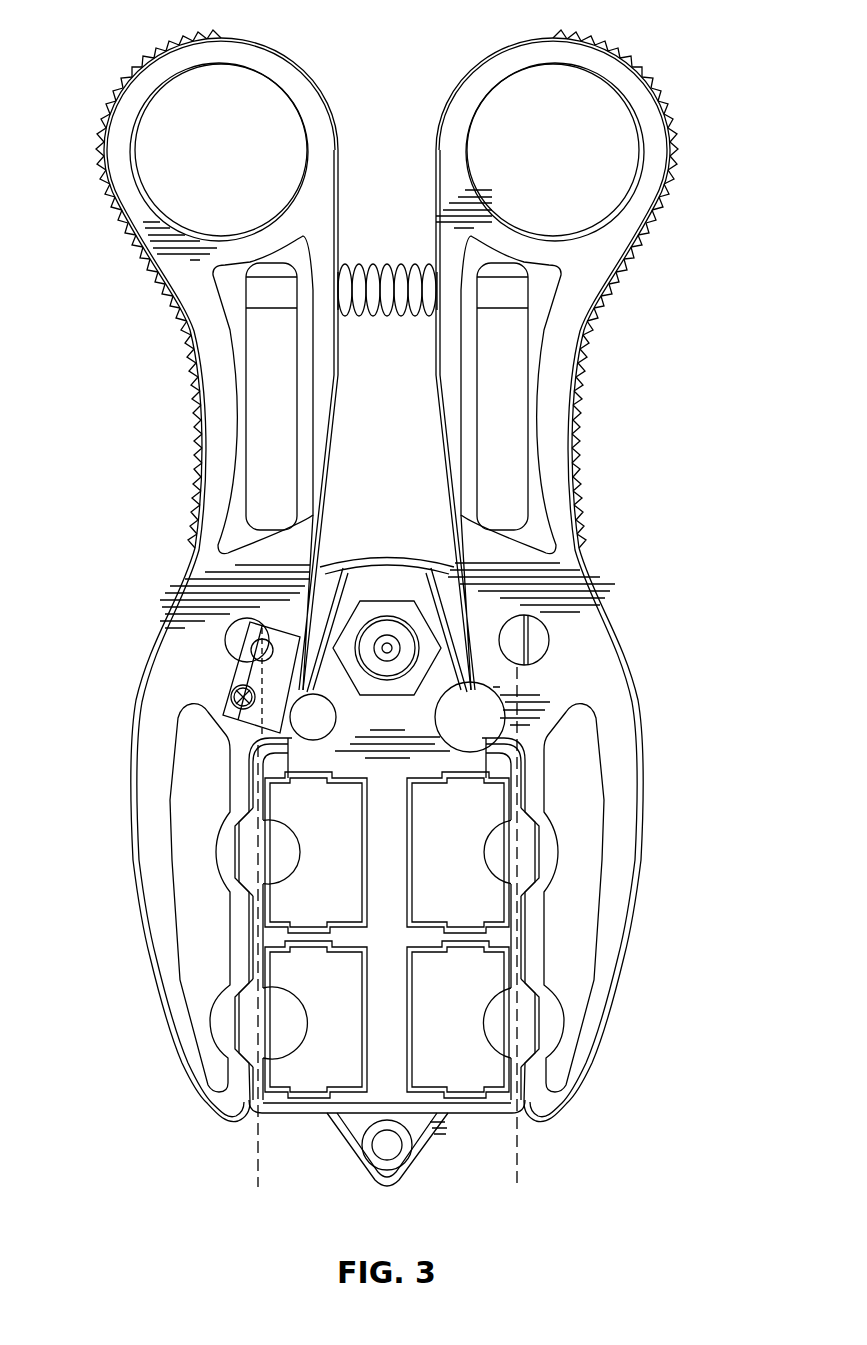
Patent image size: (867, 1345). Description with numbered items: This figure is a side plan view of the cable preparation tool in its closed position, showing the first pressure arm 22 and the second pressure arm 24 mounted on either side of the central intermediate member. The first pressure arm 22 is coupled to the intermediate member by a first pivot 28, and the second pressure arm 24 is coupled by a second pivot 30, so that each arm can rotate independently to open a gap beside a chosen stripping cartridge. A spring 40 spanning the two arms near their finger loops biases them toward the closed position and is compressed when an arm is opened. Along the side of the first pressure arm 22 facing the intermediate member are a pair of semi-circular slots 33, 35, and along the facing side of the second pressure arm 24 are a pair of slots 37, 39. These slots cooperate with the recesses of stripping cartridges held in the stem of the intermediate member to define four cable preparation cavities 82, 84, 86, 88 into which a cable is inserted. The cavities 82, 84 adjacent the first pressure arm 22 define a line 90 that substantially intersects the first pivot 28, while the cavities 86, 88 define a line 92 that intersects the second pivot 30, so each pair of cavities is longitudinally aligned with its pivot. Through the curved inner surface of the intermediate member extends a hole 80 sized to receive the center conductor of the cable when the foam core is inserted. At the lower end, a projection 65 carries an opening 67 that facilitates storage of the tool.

The first pressure arm 22 is at (637, 668).
The second pressure arm 24 is at (133, 736).
The first pivot 28 is at (535, 640).
The second pivot 30 is at (223, 640).
The slot 33 is at (494, 851).
The slot 35 is at (520, 1030).
The slot 37 is at (253, 858).
The slot 39 is at (253, 1032).
The spring 40 is at (407, 265).
The projection 65 is at (346, 1150).
The opening 67 is at (387, 1160).
The hole 80 is at (387, 640).
The cable preparation cavity 82 is at (538, 866).
The cable preparation cavity 84 is at (538, 1035).
The cable preparation cavity 86 is at (236, 866).
The cable preparation cavity 88 is at (236, 1035).
The line 90 is at (517, 1160).
The line 92 is at (258, 1160).